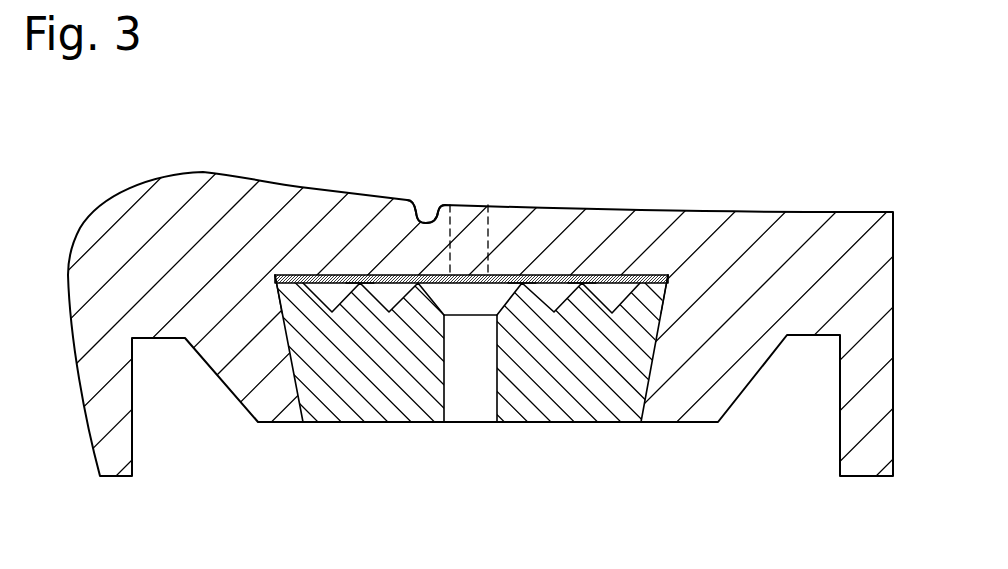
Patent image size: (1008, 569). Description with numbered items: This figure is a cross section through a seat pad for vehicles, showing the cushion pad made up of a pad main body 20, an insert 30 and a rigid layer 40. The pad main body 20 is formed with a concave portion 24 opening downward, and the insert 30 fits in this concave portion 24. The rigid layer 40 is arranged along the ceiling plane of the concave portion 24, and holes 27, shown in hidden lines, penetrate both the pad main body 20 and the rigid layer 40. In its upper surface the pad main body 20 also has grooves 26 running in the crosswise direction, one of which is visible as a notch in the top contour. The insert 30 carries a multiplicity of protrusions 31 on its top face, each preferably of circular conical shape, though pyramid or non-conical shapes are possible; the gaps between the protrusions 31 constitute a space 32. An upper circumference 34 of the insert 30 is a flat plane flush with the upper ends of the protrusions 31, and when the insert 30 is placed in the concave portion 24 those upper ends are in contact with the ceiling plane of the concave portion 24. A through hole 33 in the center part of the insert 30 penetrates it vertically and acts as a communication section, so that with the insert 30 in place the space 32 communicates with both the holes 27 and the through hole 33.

The pad main body 20 is at (711, 150).
The concave portion 24 is at (642, 378).
The grooves in a crosswise direction 26 is at (427, 211).
The holes 27 is at (507, 227).
The insert 30 is at (340, 424).
The protrusions 31 is at (350, 274).
The space 32 is at (328, 296).
The through hole 33 is at (465, 408).
The upper circumference 34 is at (277, 288).
The rigid layer 40 is at (641, 274).